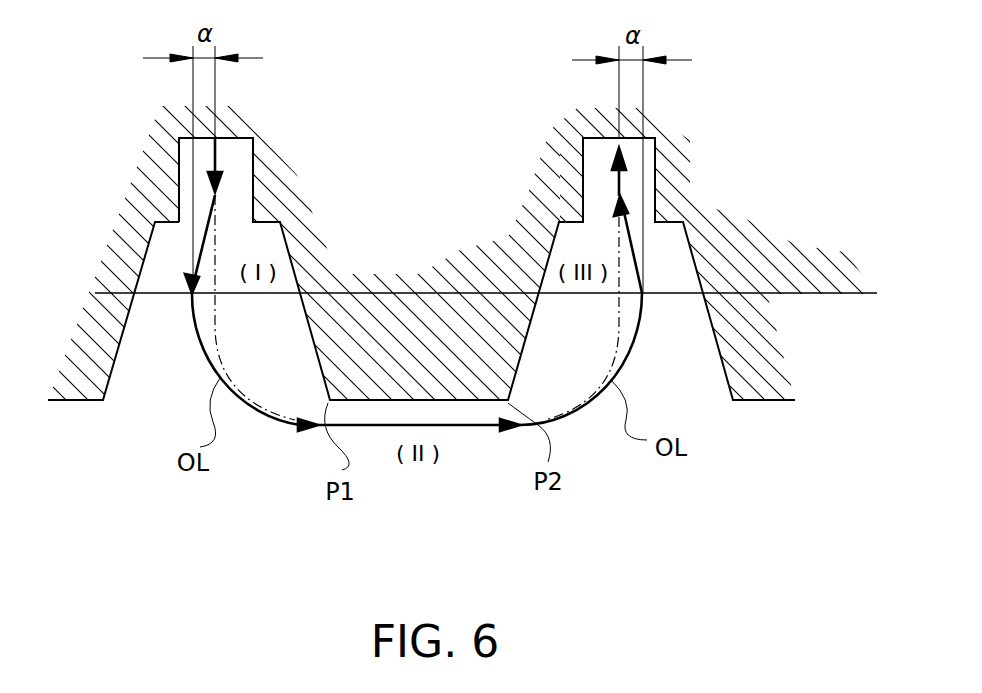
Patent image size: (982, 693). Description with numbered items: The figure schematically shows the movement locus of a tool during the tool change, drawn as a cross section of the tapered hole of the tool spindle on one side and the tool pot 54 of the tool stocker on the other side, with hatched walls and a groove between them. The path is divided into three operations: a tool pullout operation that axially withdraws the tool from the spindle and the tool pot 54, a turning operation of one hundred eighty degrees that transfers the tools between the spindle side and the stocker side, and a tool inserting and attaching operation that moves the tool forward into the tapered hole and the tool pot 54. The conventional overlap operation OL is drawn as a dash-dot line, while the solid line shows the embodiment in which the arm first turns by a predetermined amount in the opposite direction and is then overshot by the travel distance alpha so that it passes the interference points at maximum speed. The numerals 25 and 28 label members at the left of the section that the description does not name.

The land portion 28 is at (114, 365).
The first member 25 is at (240, 515).
The tool pot 54 is at (604, 515).